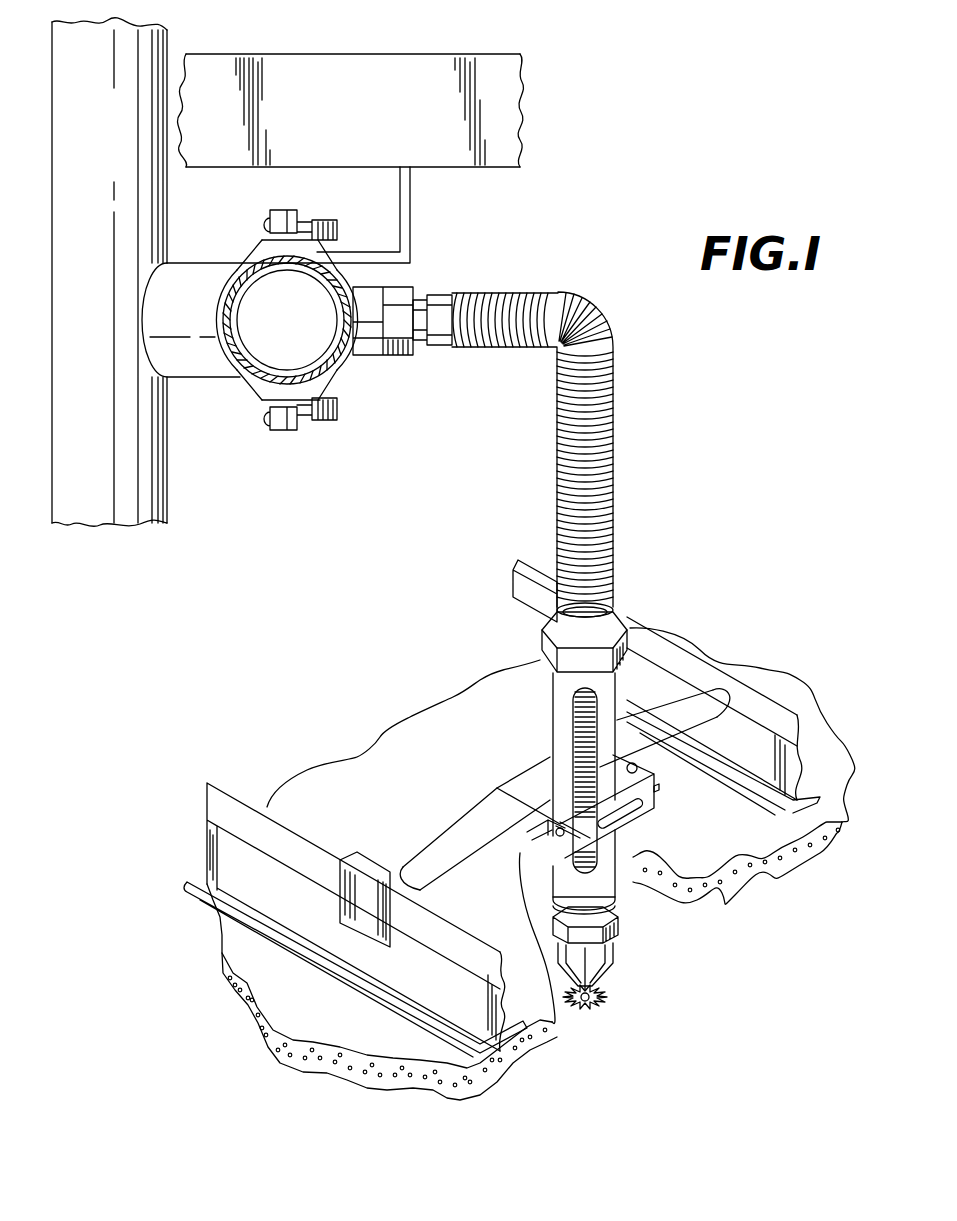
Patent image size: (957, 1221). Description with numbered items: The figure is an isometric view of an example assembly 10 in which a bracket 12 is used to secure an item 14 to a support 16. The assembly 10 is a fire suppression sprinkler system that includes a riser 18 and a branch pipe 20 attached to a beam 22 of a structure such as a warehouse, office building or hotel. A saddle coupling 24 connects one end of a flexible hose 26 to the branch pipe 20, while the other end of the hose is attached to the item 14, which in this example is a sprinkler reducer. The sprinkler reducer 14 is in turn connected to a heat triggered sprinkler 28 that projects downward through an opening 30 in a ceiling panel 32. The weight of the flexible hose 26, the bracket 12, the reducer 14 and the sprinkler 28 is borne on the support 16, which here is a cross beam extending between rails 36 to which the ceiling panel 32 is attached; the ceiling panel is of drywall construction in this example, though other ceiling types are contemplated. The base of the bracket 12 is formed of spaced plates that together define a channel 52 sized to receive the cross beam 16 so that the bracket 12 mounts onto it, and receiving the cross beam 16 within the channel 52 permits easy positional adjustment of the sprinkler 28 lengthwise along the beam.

The assembly 10 is at (290, 536).
The bracket 12 is at (518, 783).
The item 14 is at (605, 698).
The support 16 is at (450, 828).
The riser 18 is at (77, 507).
The branch pipe 20 is at (322, 297).
The beam 22 is at (507, 110).
The saddle coupling 24 is at (262, 385).
The flexible hose 26 is at (613, 453).
The heat triggered sprinkler 28 is at (612, 967).
The opening 30 is at (627, 873).
The ceiling panel 32 is at (777, 880).
The rails 36 is at (767, 707).
The channel 52 is at (527, 830).